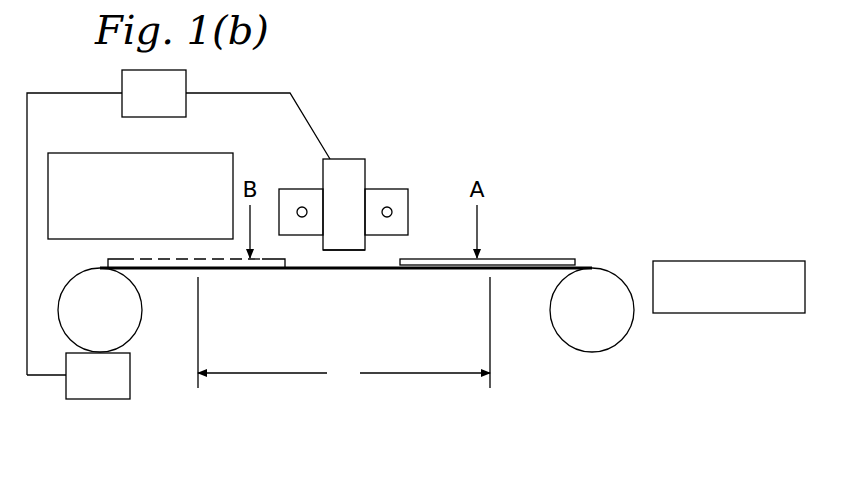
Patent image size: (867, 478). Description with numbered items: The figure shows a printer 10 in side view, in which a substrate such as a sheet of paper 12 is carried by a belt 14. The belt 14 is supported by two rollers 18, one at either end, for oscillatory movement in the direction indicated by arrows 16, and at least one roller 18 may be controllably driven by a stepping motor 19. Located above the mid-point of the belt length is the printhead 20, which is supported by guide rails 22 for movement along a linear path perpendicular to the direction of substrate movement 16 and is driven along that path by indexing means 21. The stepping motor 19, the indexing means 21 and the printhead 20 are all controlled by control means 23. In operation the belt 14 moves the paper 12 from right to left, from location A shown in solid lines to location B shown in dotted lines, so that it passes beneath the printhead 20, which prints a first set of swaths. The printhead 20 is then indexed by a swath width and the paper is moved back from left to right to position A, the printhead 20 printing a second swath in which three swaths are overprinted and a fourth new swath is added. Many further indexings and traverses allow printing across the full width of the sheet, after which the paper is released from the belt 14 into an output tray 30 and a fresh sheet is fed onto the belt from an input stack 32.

The printing system 10 is at (512, 140).
The sheet of paper 12 is at (547, 258).
The belt 14 is at (163, 273).
The arrows indicating oscillatory movement 16 is at (275, 376).
The rollers 18 is at (88, 322).
The stepping motor 19 is at (86, 389).
The printhead 20 is at (365, 243).
The indexing means 21 is at (345, 159).
The guide rails 22 is at (300, 207).
The control means 23 is at (142, 106).
The output tray 30 is at (716, 299).
The input stack 32 is at (128, 209).